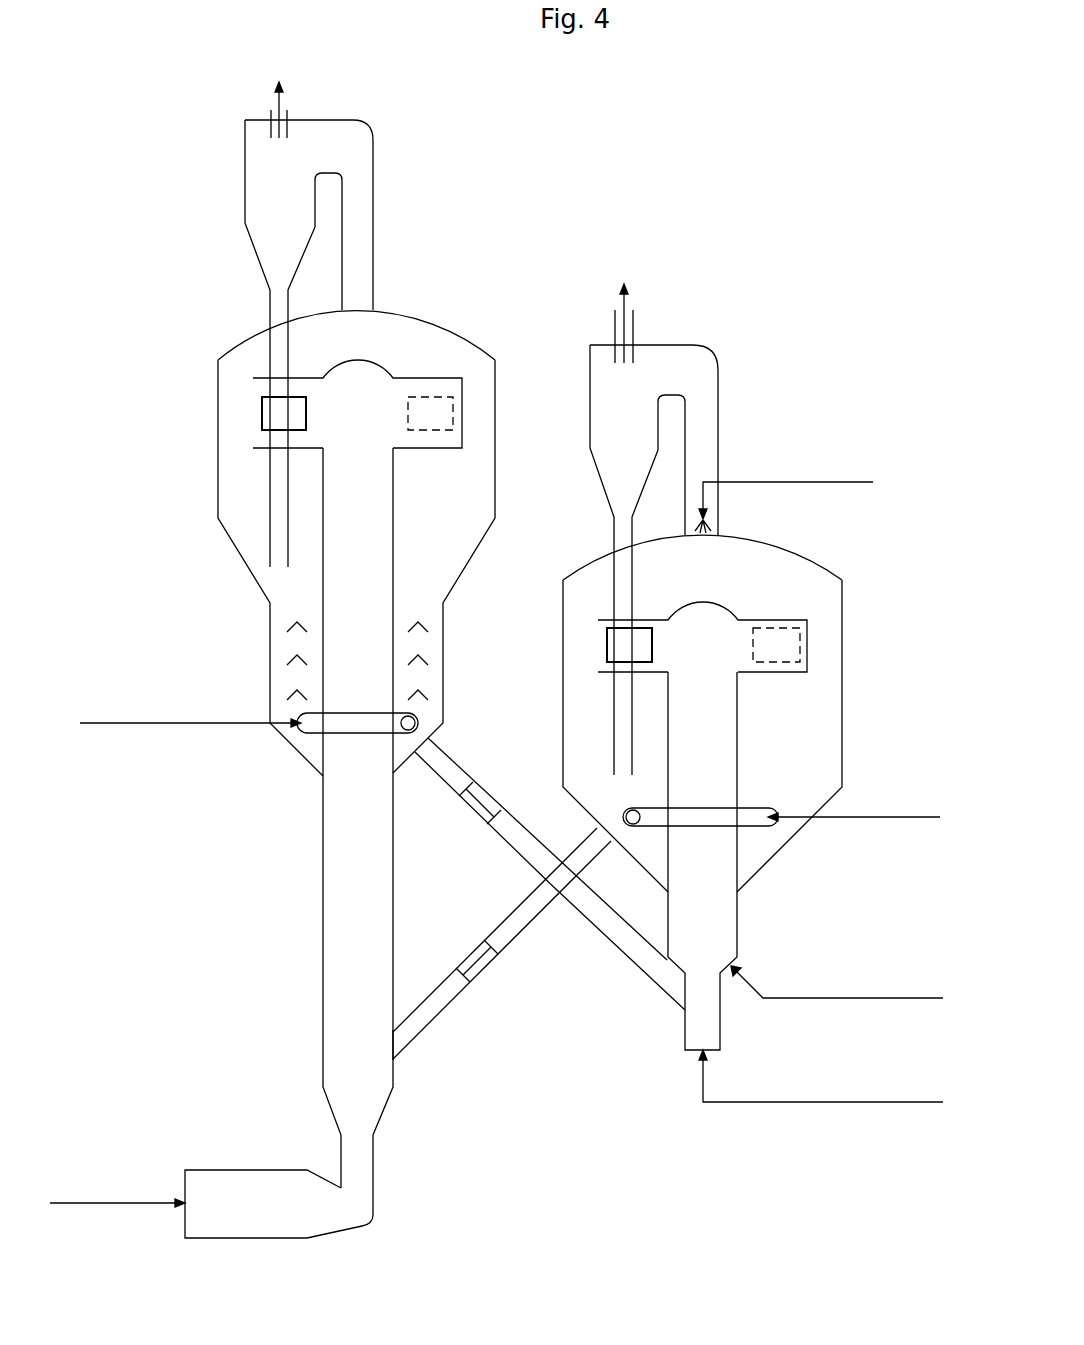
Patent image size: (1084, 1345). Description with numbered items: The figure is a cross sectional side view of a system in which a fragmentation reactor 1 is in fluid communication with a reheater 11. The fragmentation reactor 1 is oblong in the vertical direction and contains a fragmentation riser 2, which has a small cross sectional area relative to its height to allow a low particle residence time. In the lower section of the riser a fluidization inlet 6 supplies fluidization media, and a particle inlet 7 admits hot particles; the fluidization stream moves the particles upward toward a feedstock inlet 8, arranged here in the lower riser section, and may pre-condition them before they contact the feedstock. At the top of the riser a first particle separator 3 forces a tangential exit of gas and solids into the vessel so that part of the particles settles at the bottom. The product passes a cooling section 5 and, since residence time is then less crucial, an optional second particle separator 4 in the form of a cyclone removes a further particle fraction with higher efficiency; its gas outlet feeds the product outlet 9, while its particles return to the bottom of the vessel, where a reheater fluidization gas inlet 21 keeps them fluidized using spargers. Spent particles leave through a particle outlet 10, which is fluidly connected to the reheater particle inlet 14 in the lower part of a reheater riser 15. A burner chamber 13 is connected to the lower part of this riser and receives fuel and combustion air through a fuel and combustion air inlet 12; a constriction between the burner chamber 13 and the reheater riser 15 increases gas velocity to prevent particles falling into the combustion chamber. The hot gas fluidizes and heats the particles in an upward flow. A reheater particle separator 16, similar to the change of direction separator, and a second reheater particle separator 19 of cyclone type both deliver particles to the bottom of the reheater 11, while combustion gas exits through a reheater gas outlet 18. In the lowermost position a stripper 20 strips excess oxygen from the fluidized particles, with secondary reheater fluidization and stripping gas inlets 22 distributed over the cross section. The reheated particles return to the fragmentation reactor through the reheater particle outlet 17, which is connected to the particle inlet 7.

The fragmentation reactor 1 is at (847, 595).
The fragmentation riser 2 is at (740, 912).
The first particle separator 3 is at (787, 655).
The second particle separator 4 is at (625, 447).
The cooling section 5 is at (715, 560).
The fluidization inlet 6 is at (821, 1076).
The particle inlet 7 is at (668, 988).
The feedstock inlet 8 is at (837, 982).
The product outlet 9 is at (624, 311).
The particle outlet 10 is at (607, 845).
The reheater 11 is at (268, 612).
The fuel and combustion air inlet 12 is at (117, 1194).
The burner chamber 13 is at (270, 1238).
The reheater particle inlet 14 is at (394, 1060).
The reheater riser 15 is at (323, 963).
The reheater particle separator 16 is at (390, 413).
The reheater particle outlet 17 is at (437, 730).
The reheater gas outlet 18 is at (290, 108).
The second reheater particle separator 19 is at (270, 223).
The stripper 20 is at (418, 660).
The reheater fluidization gas inlet 21 is at (781, 810).
The secondary reheater fluidization and stripping gas inlet 22 is at (249, 716).